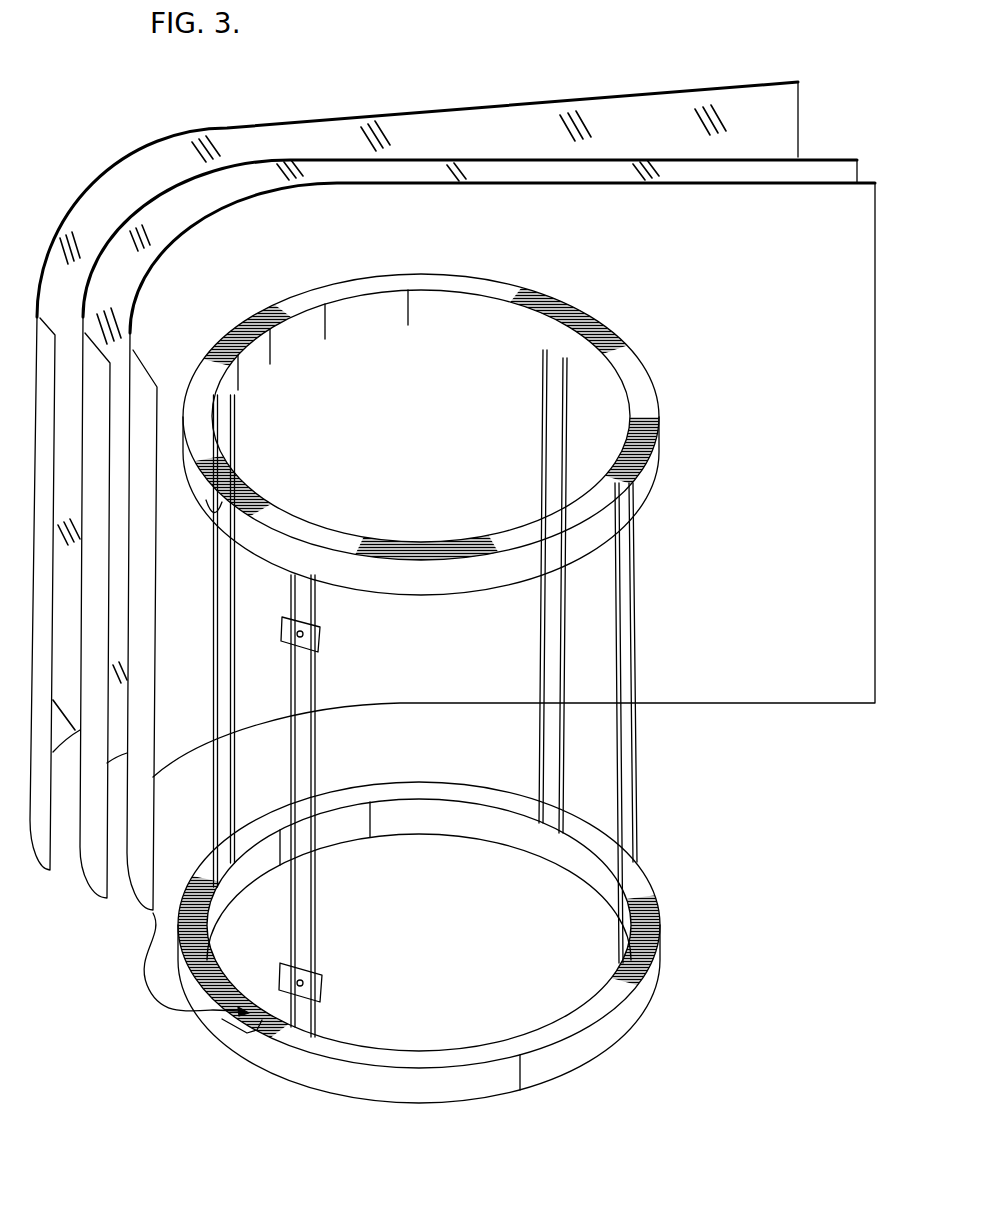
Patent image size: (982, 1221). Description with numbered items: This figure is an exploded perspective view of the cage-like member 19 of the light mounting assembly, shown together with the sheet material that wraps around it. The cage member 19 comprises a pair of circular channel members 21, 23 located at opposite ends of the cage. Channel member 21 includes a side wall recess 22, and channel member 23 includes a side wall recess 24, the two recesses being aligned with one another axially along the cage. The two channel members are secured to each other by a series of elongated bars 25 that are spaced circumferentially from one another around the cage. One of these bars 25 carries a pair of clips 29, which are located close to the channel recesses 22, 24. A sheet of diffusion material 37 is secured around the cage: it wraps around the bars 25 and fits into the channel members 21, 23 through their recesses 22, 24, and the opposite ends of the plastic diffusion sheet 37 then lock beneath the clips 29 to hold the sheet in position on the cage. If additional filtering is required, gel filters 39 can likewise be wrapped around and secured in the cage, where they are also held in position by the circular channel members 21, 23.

The cage member 19 is at (491, 624).
The circular channel member 21 is at (613, 1028).
The side wall recess 22 is at (223, 1024).
The circular channel member 23 is at (665, 440).
The side wall recess 24 is at (240, 528).
The elongated bars 25 is at (633, 797).
The clips 29 is at (321, 632).
The sheet of diffusion material 37 is at (817, 673).
The gel filters 39 is at (797, 81).